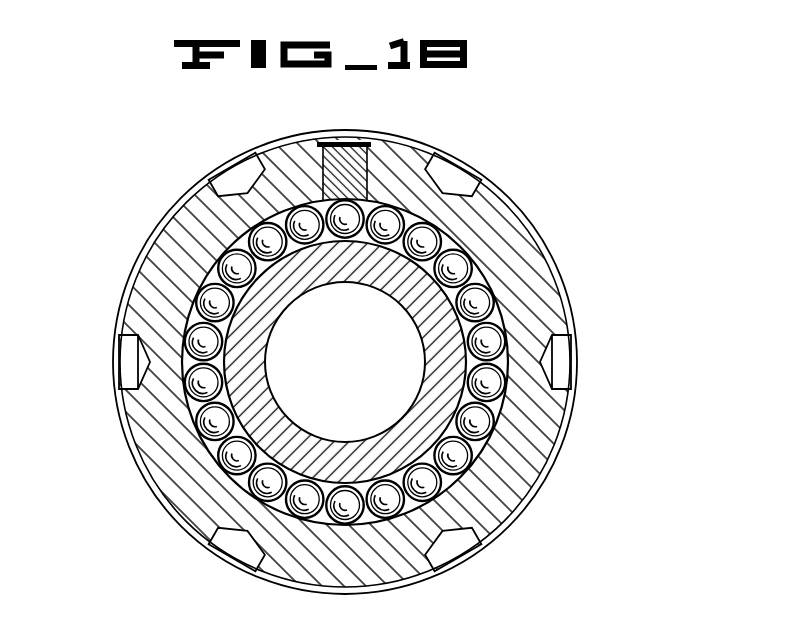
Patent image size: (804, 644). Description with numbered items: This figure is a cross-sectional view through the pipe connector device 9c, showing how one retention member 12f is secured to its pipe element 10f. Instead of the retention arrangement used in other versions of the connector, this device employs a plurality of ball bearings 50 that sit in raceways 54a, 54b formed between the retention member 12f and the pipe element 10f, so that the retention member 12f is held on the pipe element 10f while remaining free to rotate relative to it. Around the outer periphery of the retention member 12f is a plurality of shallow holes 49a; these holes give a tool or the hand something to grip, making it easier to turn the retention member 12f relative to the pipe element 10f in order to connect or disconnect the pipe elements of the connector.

The pipe connector device 9c is at (583, 157).
The retention member 12f is at (556, 433).
The shallow holes 49a is at (235, 166).
The ball bearings 50 is at (349, 238).
The raceway 54a is at (463, 346).
The raceway 54b is at (383, 292).
The pipe element 10f is at (423, 378).